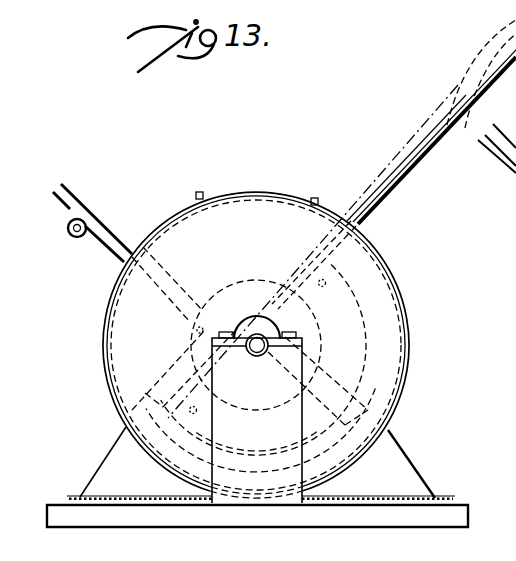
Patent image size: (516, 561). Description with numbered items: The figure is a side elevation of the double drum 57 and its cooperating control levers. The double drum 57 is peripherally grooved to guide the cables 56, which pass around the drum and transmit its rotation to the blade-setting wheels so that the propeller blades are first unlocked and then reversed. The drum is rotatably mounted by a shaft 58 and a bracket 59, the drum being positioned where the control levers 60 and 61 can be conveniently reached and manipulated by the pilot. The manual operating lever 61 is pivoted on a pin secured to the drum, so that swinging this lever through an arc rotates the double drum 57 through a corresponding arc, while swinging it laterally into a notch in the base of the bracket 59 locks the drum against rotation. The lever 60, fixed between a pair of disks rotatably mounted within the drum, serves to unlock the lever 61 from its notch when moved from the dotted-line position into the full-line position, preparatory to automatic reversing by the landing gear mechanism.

The cables 56 is at (430, 497).
The double drum 57 is at (406, 330).
The shaft 58 is at (257, 355).
The bracket 59 is at (257, 417).
The lever 60 is at (94, 217).
The manual operating lever 61 is at (402, 181).